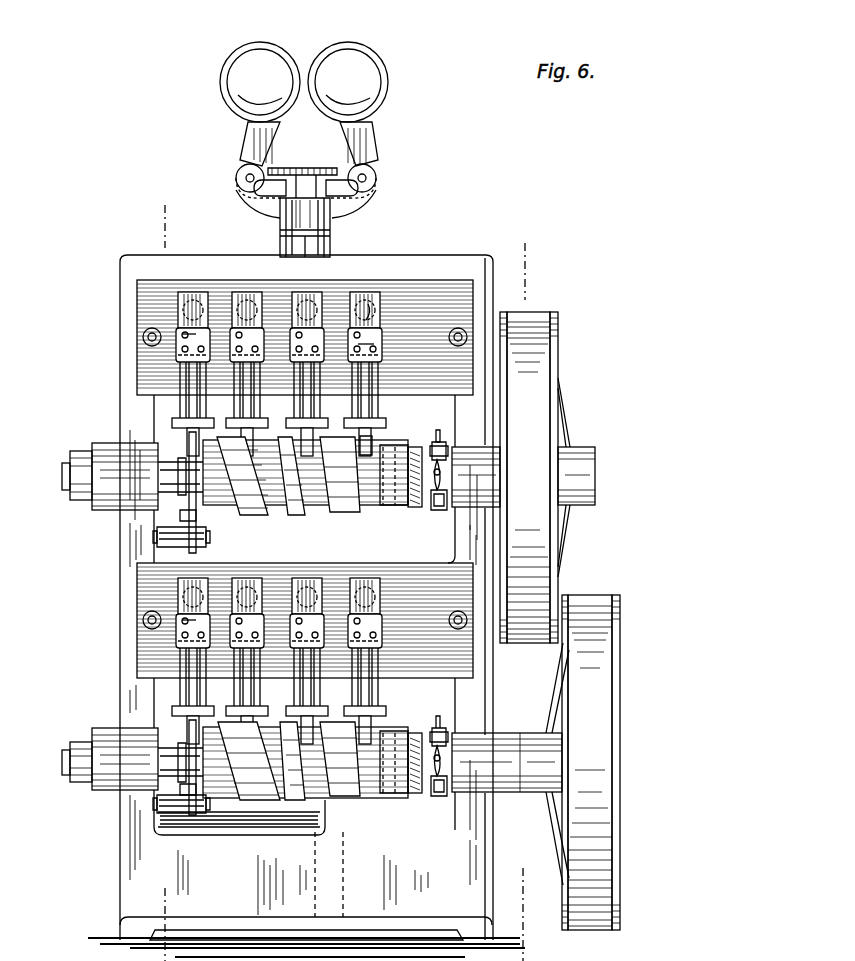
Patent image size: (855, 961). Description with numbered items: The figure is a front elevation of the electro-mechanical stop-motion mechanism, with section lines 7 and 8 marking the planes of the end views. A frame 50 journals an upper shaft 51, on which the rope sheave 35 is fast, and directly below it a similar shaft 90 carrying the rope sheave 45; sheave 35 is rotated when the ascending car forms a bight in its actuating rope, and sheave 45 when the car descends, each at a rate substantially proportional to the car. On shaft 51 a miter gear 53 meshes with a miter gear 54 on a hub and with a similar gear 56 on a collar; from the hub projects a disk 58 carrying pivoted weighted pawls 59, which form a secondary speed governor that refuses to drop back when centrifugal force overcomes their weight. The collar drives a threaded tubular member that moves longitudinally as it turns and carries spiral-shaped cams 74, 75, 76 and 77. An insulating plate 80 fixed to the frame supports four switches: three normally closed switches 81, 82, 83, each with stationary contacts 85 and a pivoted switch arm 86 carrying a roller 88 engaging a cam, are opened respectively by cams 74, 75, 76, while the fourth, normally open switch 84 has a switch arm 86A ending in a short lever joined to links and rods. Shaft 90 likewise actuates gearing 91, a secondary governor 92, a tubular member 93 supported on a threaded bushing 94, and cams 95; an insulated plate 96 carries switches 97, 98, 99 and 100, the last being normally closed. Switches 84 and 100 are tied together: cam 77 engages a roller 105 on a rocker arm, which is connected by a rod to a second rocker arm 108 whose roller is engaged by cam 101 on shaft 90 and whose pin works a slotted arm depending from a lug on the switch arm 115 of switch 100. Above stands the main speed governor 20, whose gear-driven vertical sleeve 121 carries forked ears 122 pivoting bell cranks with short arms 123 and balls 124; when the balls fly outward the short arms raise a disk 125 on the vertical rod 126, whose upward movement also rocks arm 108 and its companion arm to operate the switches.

The section line 7— 7 is at (152, 218).
The section line 8— 8 is at (537, 295).
The main speed governor 20 is at (297, 141).
The rope sheave 35 is at (540, 390).
The rope sheave 45 is at (600, 700).
The frame 50 is at (125, 375).
The shaft 51 is at (62, 478).
The miter gear 53 is at (395, 448).
The miter gear 54 is at (426, 508).
The miter gear 56 is at (403, 503).
The disk 58 is at (437, 444).
The weighted pawl 59 is at (441, 432).
The spiral cam 74 is at (370, 480).
The spiral cam 75 is at (322, 515).
The spiral cam 76 is at (285, 440).
The spiral cam 77 is at (250, 512).
The insulating plate 80 is at (435, 305).
The switch 81 is at (375, 308).
The switch 82 is at (315, 308).
The switch 83 is at (258, 294).
The switch 84 is at (200, 308).
The stationary contact 85 is at (372, 318).
The switch arm 86 is at (376, 350).
The switch arm 86A is at (185, 345).
The roller 88 is at (362, 440).
The shaft 90 is at (62, 762).
The gearing 91 is at (410, 735).
The secondary governor 92 is at (436, 800).
The tubular member 93 is at (290, 780).
The threaded bushing 94 is at (145, 787).
The cams 95 is at (352, 798).
The insulated plate 96 is at (305, 620).
The switch 97 is at (375, 582).
The switch 98 is at (318, 580).
The switch 99 is at (258, 580).
The switch 100 is at (200, 578).
The cam 101 is at (262, 790).
The roller 105 is at (208, 524).
The rocker arm 108 is at (180, 802).
The switch arm 115 is at (180, 632).
The vertical sleeve 121 is at (322, 218).
The forked ear 122 is at (237, 188).
The short arm 123 is at (333, 168).
The ball 124 is at (340, 50).
The disk 125 is at (306, 168).
The vertical rod 126 is at (292, 198).